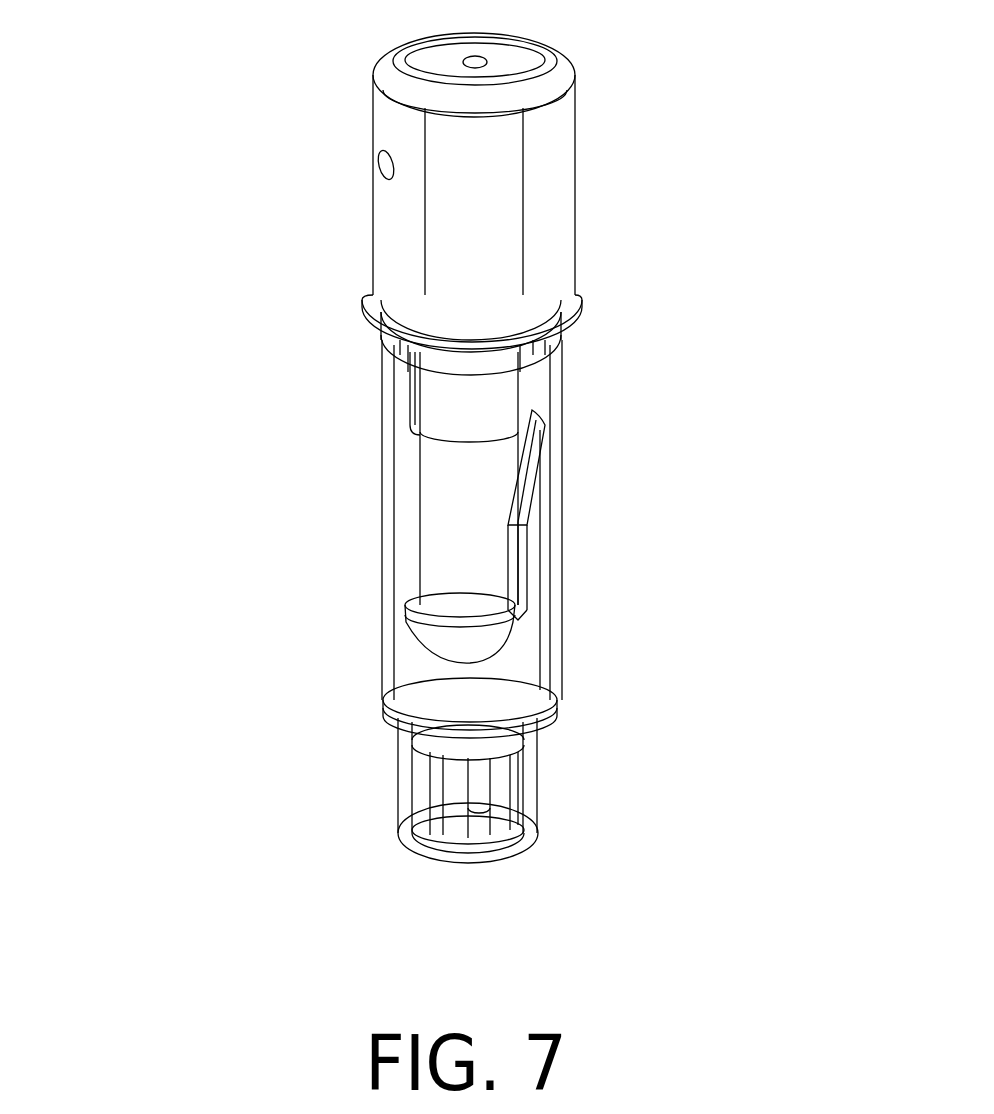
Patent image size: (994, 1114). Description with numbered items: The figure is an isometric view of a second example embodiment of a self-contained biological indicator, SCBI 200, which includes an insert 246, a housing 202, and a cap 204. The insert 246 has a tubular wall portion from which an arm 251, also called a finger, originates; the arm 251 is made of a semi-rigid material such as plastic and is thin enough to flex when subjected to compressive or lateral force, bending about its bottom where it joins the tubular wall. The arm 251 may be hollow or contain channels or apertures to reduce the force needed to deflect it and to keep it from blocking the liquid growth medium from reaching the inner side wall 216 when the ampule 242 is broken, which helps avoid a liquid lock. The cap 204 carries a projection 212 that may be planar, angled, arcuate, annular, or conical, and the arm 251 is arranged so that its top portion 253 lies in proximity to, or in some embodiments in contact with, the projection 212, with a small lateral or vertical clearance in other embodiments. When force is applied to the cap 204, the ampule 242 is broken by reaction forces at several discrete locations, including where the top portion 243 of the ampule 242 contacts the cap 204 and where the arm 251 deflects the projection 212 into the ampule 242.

The SCBI 200 is at (193, 212).
The housing 202 is at (343, 520).
The cap 204 is at (653, 193).
The projection 212 is at (527, 383).
The inner side wall 216 is at (540, 638).
The ampule 242 is at (460, 548).
The top portion of ampule 243 is at (487, 103).
The insert 246 is at (442, 673).
The arm 251 is at (527, 558).
The top portion of arm 253 is at (533, 467).